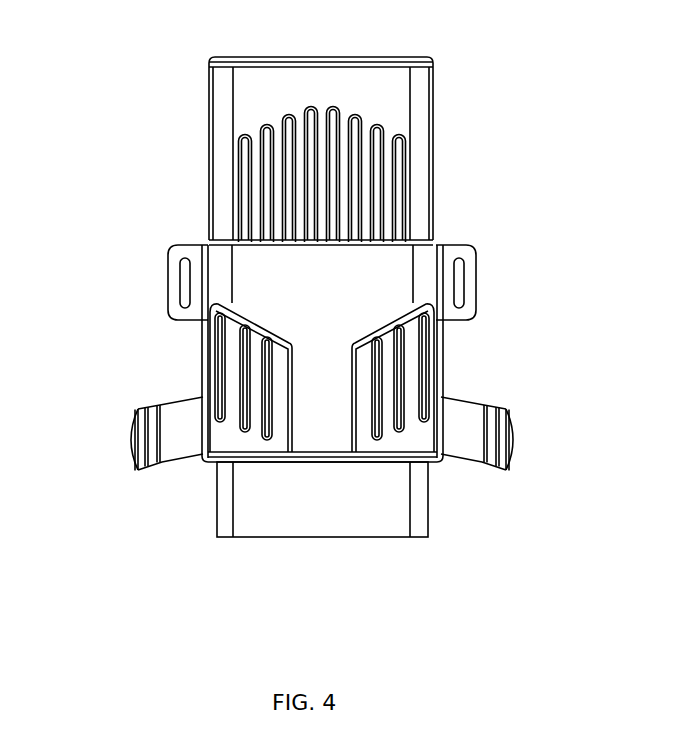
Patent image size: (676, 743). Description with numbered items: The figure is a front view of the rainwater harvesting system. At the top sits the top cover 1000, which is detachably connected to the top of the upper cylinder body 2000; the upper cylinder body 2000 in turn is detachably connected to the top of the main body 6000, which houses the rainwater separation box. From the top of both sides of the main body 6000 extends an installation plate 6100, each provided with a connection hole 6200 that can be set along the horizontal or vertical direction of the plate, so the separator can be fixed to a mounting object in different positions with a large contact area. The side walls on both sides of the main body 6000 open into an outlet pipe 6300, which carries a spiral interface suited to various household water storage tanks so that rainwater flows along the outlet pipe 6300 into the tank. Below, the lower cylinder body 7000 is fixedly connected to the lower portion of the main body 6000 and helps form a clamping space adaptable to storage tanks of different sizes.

The top cover 1000 is at (308, 313).
The upper cylinder body 2000 is at (423, 162).
The main body 6000 is at (274, 353).
The installation plate 6100 is at (260, 301).
The connection hole 6200 is at (182, 295).
The outlet pipe 6300 is at (180, 448).
The lower cylinder body 7000 is at (340, 500).